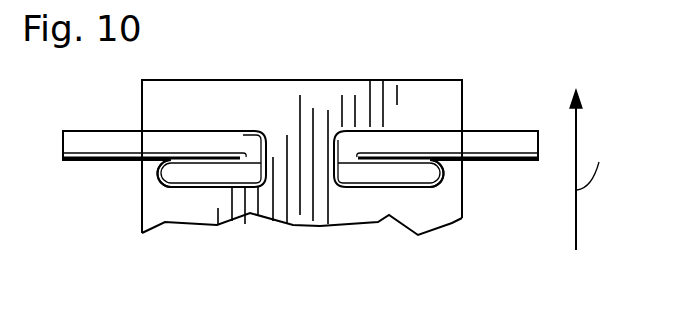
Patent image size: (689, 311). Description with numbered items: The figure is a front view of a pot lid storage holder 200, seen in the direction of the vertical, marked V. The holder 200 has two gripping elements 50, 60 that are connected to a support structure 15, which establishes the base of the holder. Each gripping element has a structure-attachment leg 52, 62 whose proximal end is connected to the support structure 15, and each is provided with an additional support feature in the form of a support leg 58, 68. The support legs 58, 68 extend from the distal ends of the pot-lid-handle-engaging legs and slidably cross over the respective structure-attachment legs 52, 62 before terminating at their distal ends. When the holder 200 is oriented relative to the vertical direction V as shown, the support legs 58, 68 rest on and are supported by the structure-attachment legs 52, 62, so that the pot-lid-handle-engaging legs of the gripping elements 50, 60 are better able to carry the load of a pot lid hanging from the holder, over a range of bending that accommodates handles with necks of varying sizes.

The pot lid storage holder 200 is at (490, 54).
The support structure 15 is at (279, 118).
The support leg 58 is at (213, 143).
The structure-attachment leg 52 is at (171, 183).
The gripping element 50 is at (202, 200).
The support leg 68 is at (385, 140).
The structure-attachment leg 62 is at (430, 180).
The gripping element 60 is at (372, 200).